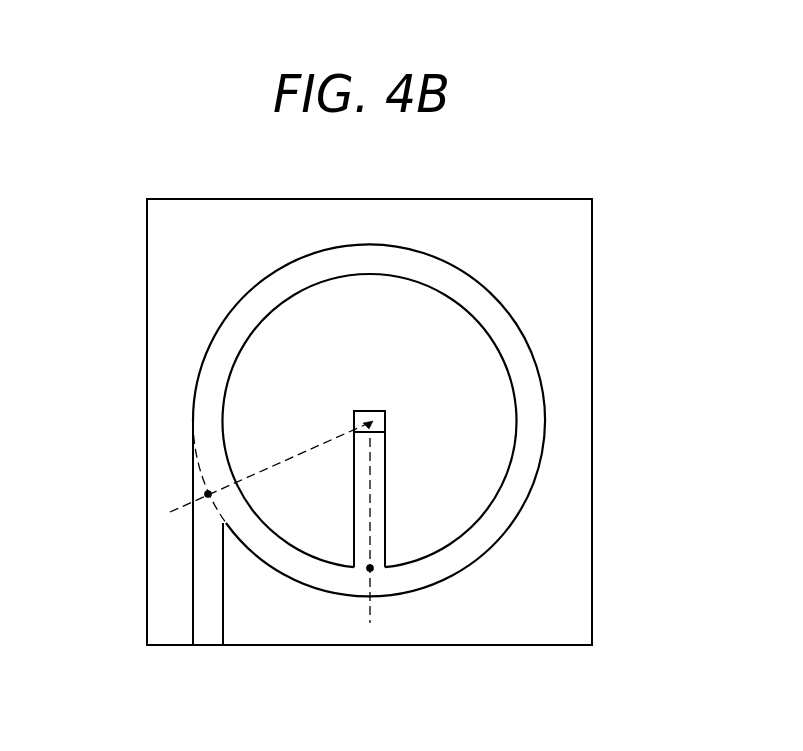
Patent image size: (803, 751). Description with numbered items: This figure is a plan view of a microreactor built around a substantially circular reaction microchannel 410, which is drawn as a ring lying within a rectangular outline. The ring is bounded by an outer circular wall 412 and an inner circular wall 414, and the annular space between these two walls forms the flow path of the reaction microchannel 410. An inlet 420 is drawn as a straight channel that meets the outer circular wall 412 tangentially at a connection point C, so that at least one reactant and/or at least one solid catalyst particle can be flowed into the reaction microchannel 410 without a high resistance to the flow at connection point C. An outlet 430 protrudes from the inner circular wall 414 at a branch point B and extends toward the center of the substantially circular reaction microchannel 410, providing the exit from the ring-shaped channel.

The substantially circular reaction microchannel 410 is at (441, 420).
The outer circular wall 412 is at (513, 316).
The inner circular wall 414 is at (517, 423).
The inlet 420 is at (195, 578).
The outlet 430 is at (385, 480).
The branch point B is at (370, 568).
The connection point C is at (206, 493).